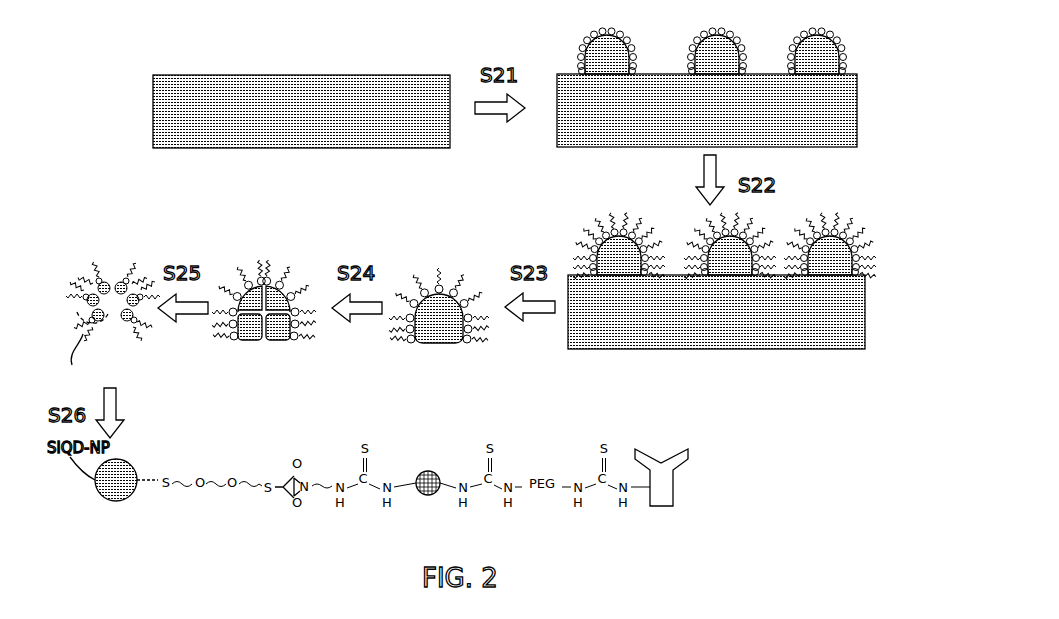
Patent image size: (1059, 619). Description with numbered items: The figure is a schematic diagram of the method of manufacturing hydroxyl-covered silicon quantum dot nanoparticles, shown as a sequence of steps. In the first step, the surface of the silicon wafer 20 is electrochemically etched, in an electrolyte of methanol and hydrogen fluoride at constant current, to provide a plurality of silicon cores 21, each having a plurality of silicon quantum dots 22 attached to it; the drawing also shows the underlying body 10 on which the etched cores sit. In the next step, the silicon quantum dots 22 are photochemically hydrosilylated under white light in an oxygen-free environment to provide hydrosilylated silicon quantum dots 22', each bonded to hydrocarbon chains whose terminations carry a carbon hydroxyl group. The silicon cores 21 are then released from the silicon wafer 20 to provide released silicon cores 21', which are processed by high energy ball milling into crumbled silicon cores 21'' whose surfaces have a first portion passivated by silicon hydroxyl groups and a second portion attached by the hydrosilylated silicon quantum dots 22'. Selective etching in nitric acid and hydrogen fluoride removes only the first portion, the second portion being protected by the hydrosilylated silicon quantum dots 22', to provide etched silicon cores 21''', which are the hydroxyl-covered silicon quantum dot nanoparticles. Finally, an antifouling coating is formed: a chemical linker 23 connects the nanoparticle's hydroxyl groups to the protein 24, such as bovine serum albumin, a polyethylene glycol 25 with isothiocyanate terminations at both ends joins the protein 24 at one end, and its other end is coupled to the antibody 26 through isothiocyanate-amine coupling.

The substrate 10 is at (557, 135).
The silicon wafer 20 is at (153, 137).
The silicon core 21 is at (599, 153).
The silicon quantum dot 22 is at (692, 42).
The released silicon core 21' is at (439, 281).
The hydrosilylated silicon quantum dot 22' is at (456, 238).
The crumbled silicon core 21'' is at (267, 277).
The etched silicon core 21''' is at (101, 297).
The linker 23 is at (256, 468).
The protein 24 is at (430, 495).
The polyethylene glycol 25 is at (533, 458).
The antibody 26 is at (673, 490).